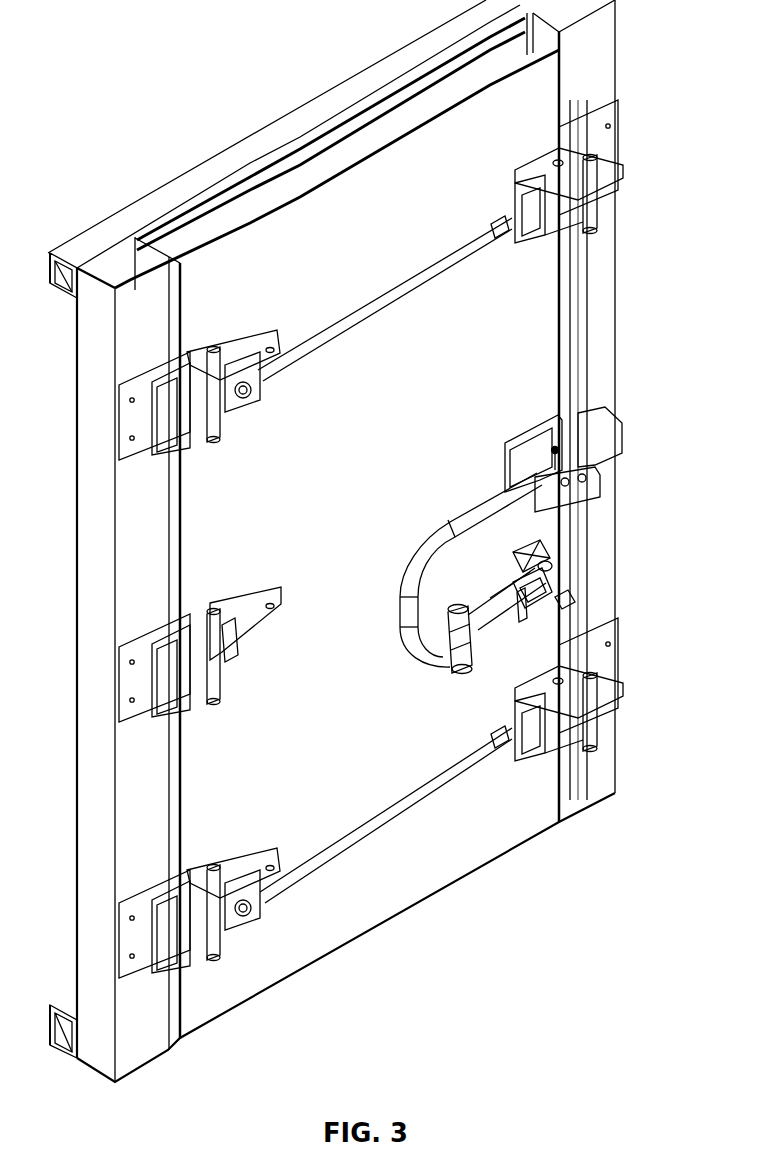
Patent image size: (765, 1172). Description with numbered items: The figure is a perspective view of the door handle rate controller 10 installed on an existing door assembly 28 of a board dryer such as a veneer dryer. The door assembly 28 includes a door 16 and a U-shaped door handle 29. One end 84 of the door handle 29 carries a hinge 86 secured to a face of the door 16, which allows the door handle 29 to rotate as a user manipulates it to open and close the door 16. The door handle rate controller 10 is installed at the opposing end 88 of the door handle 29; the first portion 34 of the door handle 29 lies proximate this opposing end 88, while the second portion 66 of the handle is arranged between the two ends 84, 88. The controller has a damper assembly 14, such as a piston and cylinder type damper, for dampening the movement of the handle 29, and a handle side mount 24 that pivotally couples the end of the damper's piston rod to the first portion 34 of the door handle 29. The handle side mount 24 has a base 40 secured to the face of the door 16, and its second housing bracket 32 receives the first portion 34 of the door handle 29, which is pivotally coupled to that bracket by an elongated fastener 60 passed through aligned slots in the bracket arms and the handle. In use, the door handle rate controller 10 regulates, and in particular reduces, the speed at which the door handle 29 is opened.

The door assembly 28 is at (178, 141).
The door 16 is at (252, 514).
The first portion of the door handle 34 is at (612, 641).
The end of the door handle 84 is at (592, 488).
The hinge 86 is at (552, 446).
The door handle 29 is at (458, 494).
The door handle rate controller 10 is at (490, 573).
The damper assembly 14 is at (488, 599).
The handle side mount 24 is at (523, 543).
The base 40 is at (602, 552).
The elongated fastener 60 is at (590, 588).
The opposing end of the door handle 88 is at (574, 602).
The second housing bracket 32 is at (527, 596).
The second portion of the door handle 66 is at (460, 676).